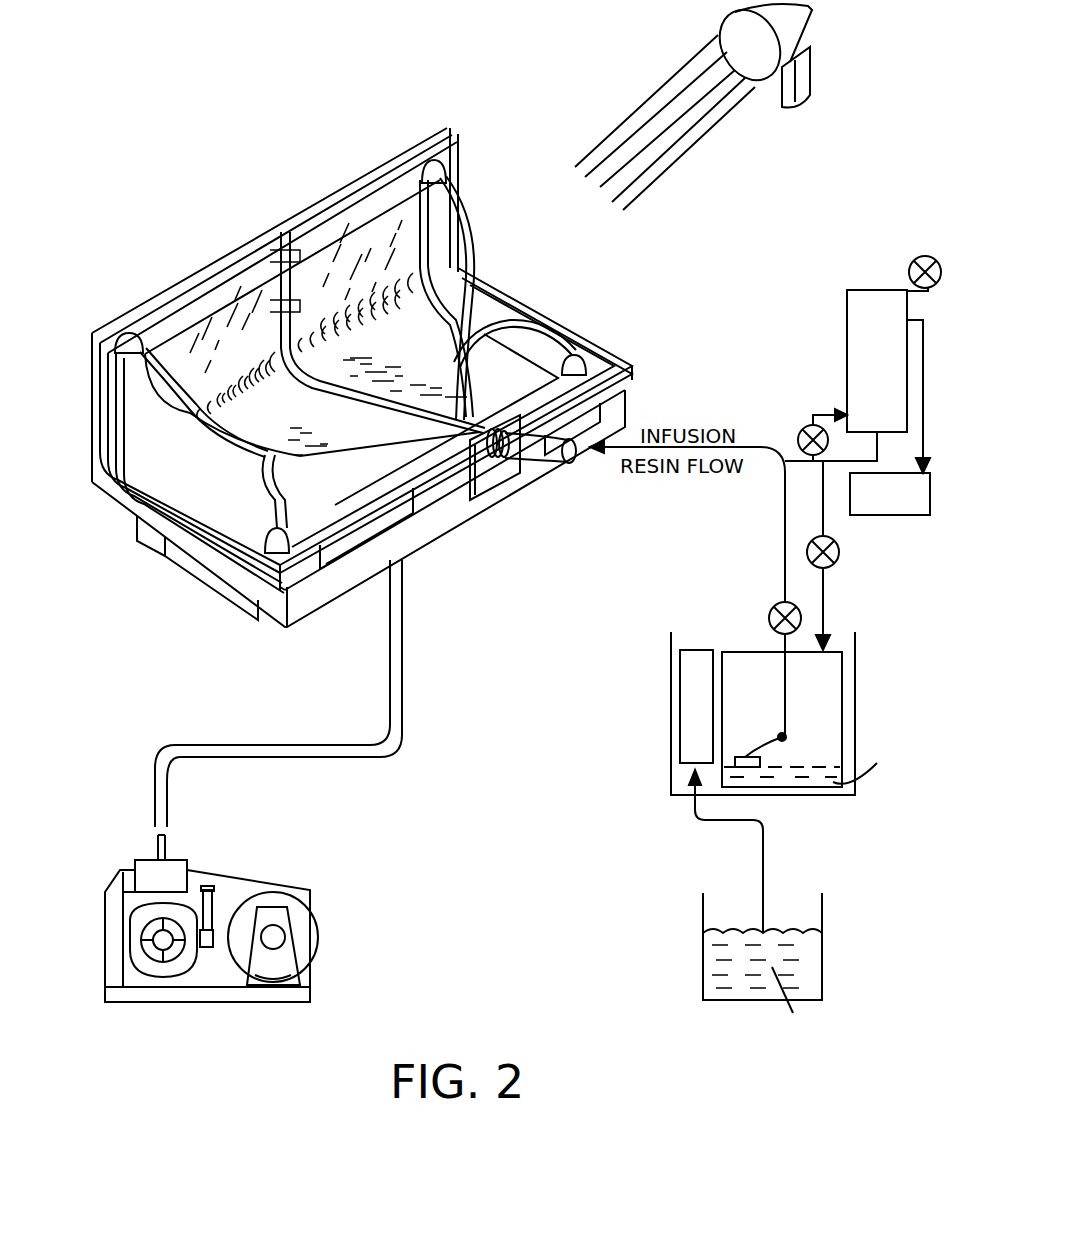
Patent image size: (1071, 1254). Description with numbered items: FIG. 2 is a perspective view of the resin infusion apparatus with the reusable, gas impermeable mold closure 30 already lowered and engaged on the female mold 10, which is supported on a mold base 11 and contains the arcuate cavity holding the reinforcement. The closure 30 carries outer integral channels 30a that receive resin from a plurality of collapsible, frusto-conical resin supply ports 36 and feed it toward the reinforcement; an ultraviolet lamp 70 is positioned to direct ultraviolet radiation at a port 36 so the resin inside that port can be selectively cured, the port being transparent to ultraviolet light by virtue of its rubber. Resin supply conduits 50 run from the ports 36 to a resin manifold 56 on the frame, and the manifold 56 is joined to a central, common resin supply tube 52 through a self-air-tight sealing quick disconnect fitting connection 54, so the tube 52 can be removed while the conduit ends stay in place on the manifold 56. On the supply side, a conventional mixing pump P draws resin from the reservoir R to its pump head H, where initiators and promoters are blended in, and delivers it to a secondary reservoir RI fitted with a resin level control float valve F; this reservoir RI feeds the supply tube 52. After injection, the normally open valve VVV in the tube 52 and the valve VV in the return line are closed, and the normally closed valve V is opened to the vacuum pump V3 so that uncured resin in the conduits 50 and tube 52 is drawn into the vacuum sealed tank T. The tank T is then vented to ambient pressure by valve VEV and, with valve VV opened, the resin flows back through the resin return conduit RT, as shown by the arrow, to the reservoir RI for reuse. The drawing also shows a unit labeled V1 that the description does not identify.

The female mold 10 is at (628, 387).
The mold base 11 is at (418, 553).
The mold closure 30 is at (386, 203).
The outer integral channel 30a is at (540, 350).
The collapsible resin supply port 36 is at (445, 157).
The resin supply conduit 50 is at (500, 322).
The central, common resin supply tube 52 is at (570, 460).
The quick disconnect fitting connection 54 is at (492, 453).
The resin manifold 56 is at (503, 465).
The ultraviolet lamp 70 is at (782, 110).
The vacuum sealed tank T is at (867, 290).
The vent valve VEV is at (917, 257).
The normally closed valve V is at (803, 430).
The vacuum pump V3 is at (867, 517).
The normally closed valve in return line VV is at (812, 542).
The normally open valve in supply tube VVV is at (773, 607).
The resin return conduit RT is at (823, 587).
The secondary reservoir RI is at (818, 700).
The pump head H is at (690, 732).
The mixing pump P is at (671, 692).
The resin level control float valve F is at (747, 765).
The reservoir R is at (703, 952).
The vacuum pump V1 is at (103, 953).